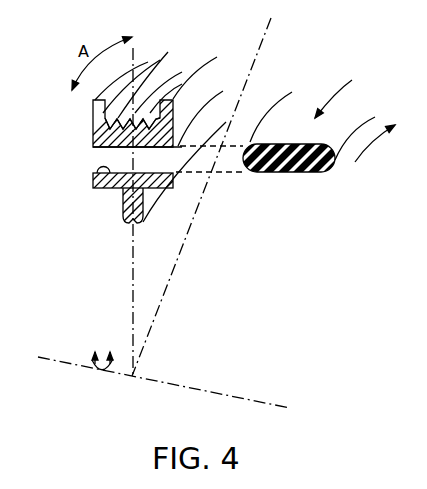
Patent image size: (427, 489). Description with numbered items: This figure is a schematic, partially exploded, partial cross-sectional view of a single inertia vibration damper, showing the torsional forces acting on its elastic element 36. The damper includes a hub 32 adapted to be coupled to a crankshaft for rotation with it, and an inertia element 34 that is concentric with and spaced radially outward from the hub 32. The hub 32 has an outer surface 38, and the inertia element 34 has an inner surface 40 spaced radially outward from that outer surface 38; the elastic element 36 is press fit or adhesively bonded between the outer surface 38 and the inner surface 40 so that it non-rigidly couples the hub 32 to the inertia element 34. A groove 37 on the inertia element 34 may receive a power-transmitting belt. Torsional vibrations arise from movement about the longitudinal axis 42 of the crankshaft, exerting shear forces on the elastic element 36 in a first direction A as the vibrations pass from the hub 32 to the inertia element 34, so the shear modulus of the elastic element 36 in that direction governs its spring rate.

The hub 32 is at (103, 190).
The inertia element 34 is at (92, 122).
The elastic element 36 is at (281, 173).
The groove 37 is at (135, 113).
The outer surface 38 is at (100, 163).
The inner surface 40 is at (97, 148).
The longitudinal axis 42 is at (60, 358).